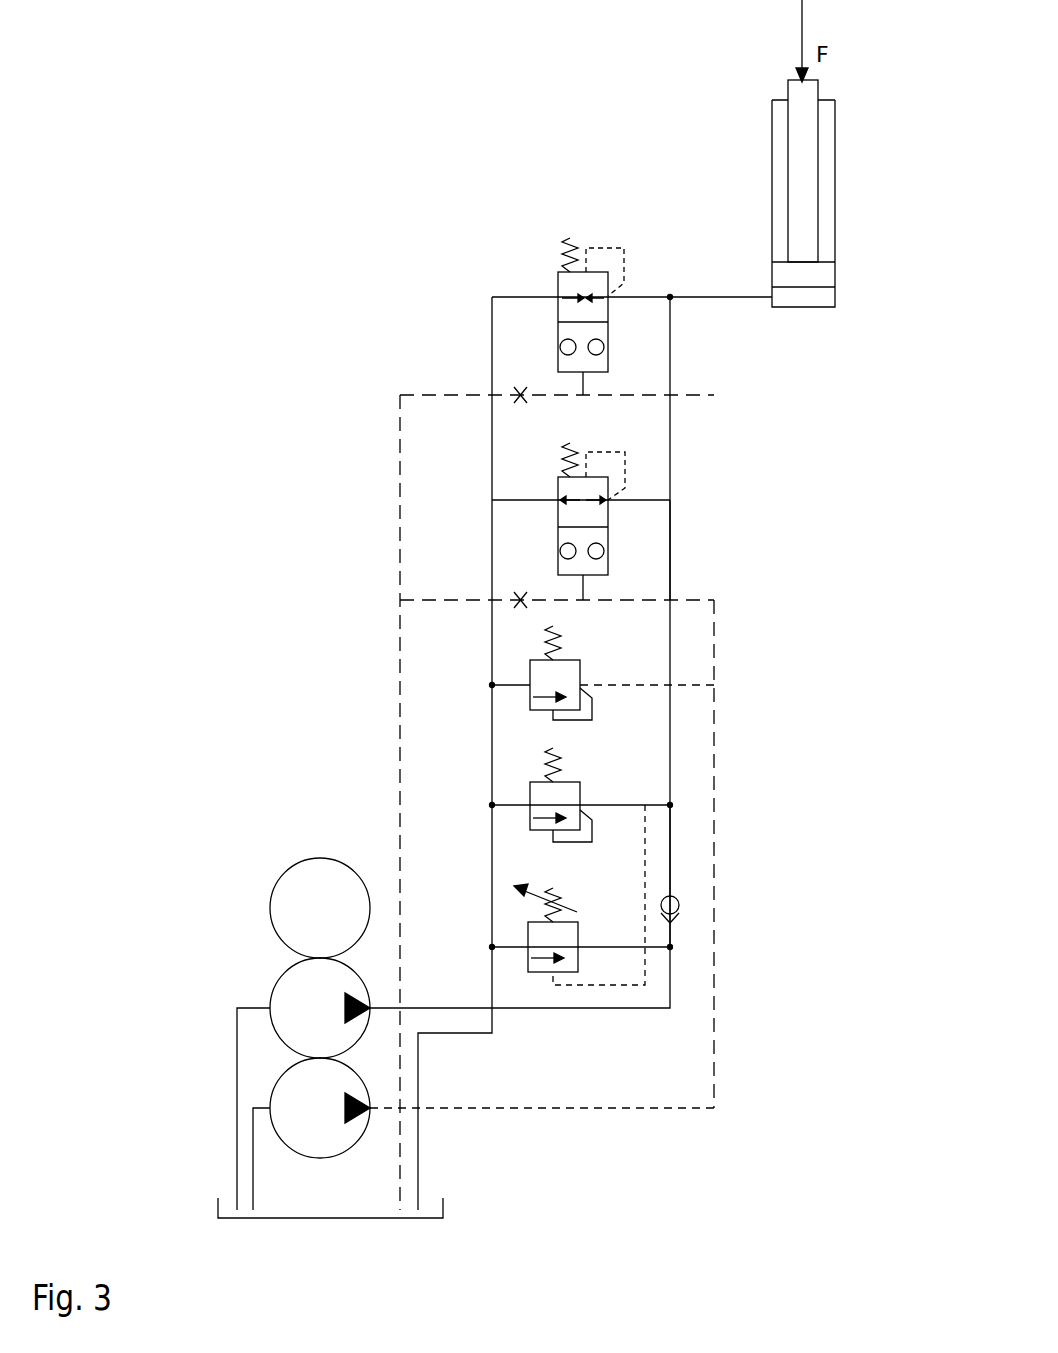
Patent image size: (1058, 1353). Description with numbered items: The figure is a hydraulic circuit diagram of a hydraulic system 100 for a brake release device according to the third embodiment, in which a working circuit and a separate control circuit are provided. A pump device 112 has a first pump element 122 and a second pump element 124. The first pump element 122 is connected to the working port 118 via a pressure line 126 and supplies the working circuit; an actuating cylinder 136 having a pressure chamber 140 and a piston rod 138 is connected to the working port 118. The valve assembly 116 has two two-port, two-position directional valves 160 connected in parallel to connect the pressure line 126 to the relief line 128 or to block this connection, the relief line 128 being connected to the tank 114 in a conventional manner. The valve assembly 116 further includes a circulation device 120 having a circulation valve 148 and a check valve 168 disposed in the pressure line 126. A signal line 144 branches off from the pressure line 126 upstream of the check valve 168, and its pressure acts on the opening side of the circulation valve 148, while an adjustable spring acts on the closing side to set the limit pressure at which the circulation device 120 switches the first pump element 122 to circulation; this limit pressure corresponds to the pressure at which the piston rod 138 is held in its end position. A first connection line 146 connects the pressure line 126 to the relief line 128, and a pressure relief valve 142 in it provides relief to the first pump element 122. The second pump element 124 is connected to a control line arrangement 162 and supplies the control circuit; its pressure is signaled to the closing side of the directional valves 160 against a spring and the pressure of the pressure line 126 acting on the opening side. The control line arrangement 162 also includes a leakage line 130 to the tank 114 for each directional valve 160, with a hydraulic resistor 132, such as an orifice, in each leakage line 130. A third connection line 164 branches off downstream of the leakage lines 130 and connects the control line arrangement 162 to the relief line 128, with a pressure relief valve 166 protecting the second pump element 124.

The hydraulic system 100 is at (240, 402).
The pump device 112 is at (240, 965).
The tank 114 is at (432, 1200).
The valve assembly 116 is at (778, 626).
The working port 118 is at (670, 297).
The circulation device 120 is at (582, 896).
The first pump element 122 is at (283, 975).
The second pump element 124 is at (273, 1088).
The pressure line 126 is at (670, 555).
The relief line 128 is at (492, 747).
The leakage line 130 is at (455, 393).
The hydraulic resistor 132 is at (520, 403).
The actuating cylinder 136 is at (748, 197).
The piston rod 138 is at (808, 201).
The pressure chamber 140 is at (797, 303).
The pressure relief valve 142 is at (575, 780).
The signal line 144 is at (646, 855).
The first connection line 146 is at (634, 805).
The circulation valve 148 is at (578, 933).
The 2/2-way directional valve 160 is at (558, 290).
The control line arrangement 162 is at (714, 790).
The third connection line 164 is at (700, 688).
The pressure relief valve 166 is at (575, 662).
The check valve 168 is at (678, 913).